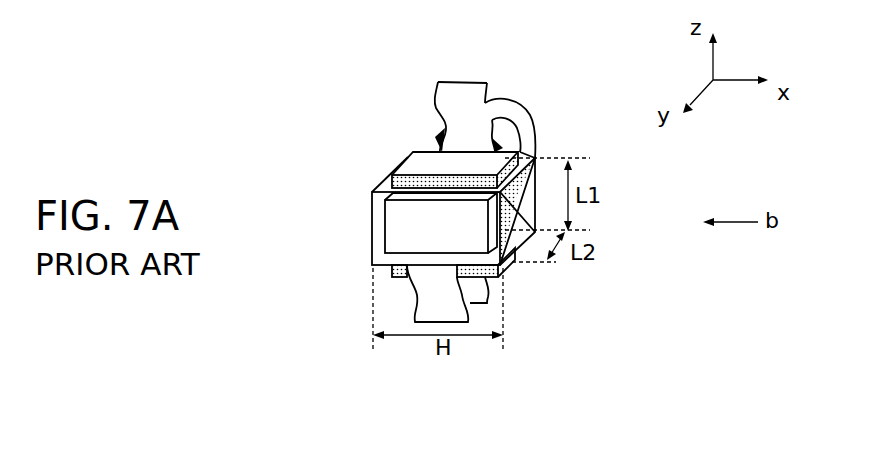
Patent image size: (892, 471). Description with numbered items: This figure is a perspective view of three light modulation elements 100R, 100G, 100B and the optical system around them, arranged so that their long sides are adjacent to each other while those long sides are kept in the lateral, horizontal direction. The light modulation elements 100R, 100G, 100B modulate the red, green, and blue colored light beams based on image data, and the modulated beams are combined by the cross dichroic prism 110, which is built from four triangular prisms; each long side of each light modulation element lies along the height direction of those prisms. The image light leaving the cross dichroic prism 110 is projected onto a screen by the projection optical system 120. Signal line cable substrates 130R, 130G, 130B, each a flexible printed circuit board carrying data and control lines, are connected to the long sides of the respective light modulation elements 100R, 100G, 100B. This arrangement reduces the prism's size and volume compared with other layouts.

The cross dichroic prism 110 is at (372, 228).
The light modulation element 100R is at (423, 155).
The signal line cable substrate 130R is at (453, 81).
The projection optical system 120 is at (503, 103).
The light modulation element 100G is at (397, 238).
The signal line cable substrate 130G is at (437, 323).
The light modulation element 100B is at (520, 258).
The signal line cable substrate 130B is at (487, 298).